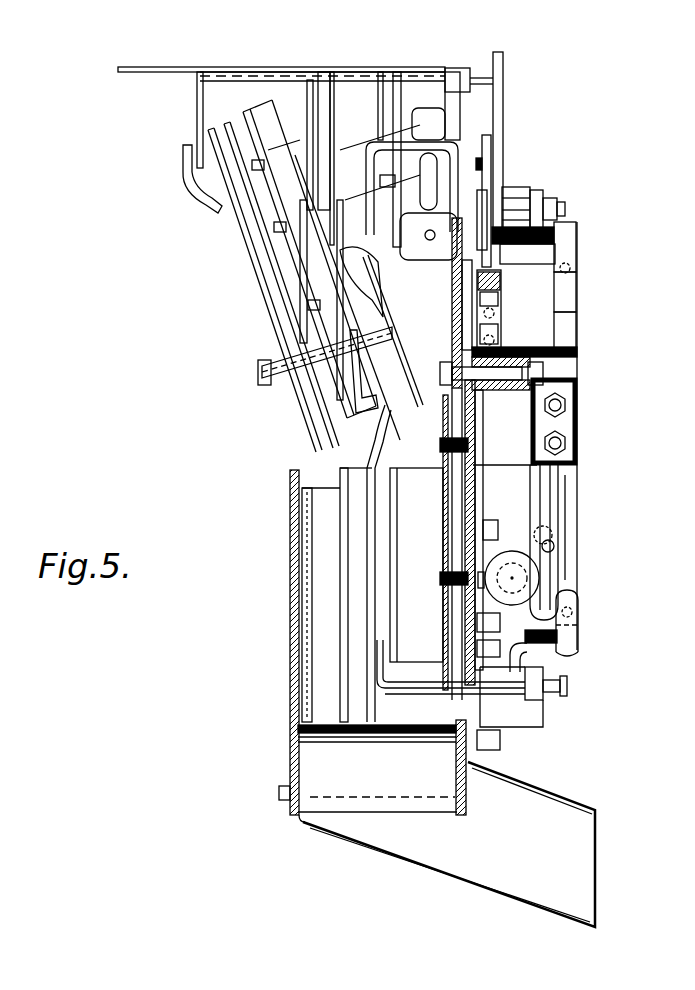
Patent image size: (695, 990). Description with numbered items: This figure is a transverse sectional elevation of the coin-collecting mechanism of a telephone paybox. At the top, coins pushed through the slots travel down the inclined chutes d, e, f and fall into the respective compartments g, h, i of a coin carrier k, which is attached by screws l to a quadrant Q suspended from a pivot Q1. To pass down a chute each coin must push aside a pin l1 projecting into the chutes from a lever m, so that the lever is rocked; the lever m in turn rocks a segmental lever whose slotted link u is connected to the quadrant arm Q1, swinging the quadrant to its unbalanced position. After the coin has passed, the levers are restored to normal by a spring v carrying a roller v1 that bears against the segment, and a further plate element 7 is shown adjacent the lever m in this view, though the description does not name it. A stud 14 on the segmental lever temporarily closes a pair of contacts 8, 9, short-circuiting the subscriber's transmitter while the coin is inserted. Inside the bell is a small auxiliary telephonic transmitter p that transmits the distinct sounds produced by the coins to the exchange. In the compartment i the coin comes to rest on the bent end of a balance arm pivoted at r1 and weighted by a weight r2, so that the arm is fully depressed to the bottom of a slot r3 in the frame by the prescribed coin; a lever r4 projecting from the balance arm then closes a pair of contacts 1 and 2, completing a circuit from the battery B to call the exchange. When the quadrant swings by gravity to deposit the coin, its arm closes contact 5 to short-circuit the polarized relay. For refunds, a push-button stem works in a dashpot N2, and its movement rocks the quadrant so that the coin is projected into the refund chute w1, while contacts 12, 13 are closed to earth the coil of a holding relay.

The pin l1 is at (273, 72).
The lever m is at (503, 106).
The plate 7 is at (492, 150).
The roller v1 is at (498, 188).
The stud 14 is at (508, 250).
The contact 8 is at (566, 255).
The contact 9 is at (566, 298).
The contact 5 is at (566, 340).
The spring v is at (492, 303).
The slotted link u is at (492, 335).
The pivot Q1 is at (515, 355).
The screws l is at (476, 438).
The compartment i is at (419, 475).
The quadrant Q is at (478, 496).
The contact 12 is at (543, 493).
The dashpot N2 is at (512, 562).
The contact 13 is at (552, 543).
The contact 1 is at (567, 565).
The battery B is at (550, 590).
The lever r4 is at (548, 612).
The contact 2 is at (570, 654).
The weight r2 is at (522, 662).
The pivot r1 is at (528, 698).
The slot r3 is at (460, 705).
The coin carrier k is at (350, 540).
The compartment g is at (318, 612).
The compartment h is at (355, 665).
The auxiliary telephonic transmitter p is at (398, 692).
The refund chute w1 is at (590, 862).
The inclined chute d is at (248, 258).
The inclined chute e is at (335, 383).
The inclined chute f is at (418, 343).